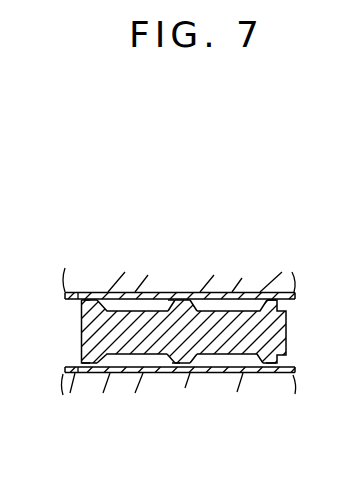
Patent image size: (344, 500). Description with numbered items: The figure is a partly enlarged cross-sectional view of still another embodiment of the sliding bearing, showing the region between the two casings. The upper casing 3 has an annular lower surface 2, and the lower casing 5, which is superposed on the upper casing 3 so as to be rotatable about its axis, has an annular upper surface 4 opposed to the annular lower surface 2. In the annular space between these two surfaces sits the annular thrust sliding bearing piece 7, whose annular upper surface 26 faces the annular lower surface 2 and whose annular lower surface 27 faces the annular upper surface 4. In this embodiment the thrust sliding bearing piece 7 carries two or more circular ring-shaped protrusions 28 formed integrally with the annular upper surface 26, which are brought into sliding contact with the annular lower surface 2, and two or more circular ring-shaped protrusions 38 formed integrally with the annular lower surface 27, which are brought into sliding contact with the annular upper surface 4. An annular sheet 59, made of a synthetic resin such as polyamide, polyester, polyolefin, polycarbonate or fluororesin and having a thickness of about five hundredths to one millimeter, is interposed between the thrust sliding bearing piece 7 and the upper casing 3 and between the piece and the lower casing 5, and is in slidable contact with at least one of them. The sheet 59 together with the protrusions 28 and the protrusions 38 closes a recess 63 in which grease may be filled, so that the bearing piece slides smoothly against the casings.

The annular lower surface 2 is at (126, 307).
The upper casing 3 is at (292, 292).
The annular upper surface 4 is at (126, 368).
The lower casing 5 is at (292, 385).
The thrust sliding bearing piece 7 is at (280, 326).
The annular upper surface 26 is at (197, 299).
The annular lower surface 27 is at (196, 374).
The circular ring-shaped protrusions 28 is at (87, 306).
The circular ring-shaped protrusions 38 is at (85, 372).
The annular sheet 59 is at (65, 297).
The closed recess 63 is at (244, 297).